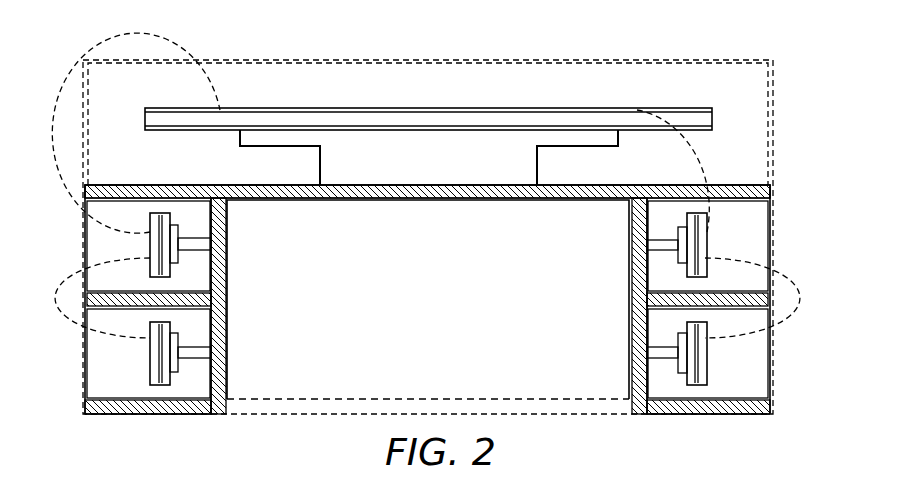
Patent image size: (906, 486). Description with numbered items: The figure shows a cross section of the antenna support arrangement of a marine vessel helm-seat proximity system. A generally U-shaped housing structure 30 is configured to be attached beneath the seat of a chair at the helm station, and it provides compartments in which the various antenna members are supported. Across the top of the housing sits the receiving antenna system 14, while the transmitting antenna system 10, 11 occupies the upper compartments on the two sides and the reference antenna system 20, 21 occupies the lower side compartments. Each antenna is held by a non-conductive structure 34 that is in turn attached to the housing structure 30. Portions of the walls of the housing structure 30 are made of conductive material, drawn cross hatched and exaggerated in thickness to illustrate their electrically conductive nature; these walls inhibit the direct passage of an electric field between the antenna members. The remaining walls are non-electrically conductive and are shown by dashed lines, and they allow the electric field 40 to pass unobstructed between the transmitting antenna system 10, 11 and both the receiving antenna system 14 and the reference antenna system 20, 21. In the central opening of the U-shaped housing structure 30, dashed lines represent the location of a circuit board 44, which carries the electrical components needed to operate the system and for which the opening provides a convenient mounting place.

The transmitting antenna system 10 is at (152, 268).
The transmitting antenna system 11 is at (707, 268).
The receiving antenna system 14 is at (396, 108).
The reference antenna system 20 is at (152, 372).
The reference antenna system 21 is at (707, 370).
The housing structure 30 is at (397, 200).
The non-conductive structures 34 is at (198, 247).
The electric field 40 is at (172, 33).
The circuit board 44 is at (520, 400).